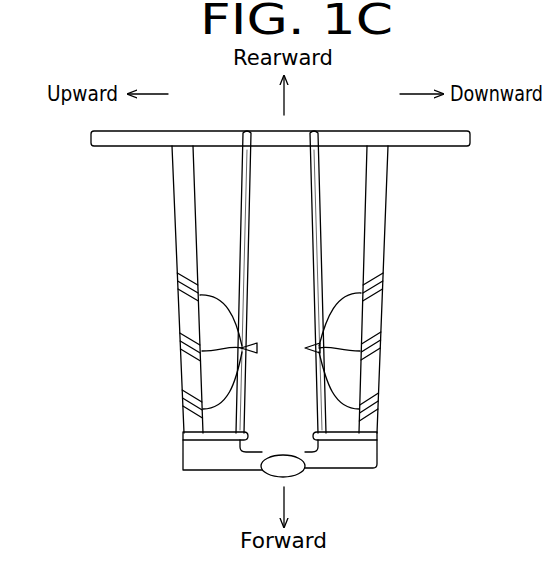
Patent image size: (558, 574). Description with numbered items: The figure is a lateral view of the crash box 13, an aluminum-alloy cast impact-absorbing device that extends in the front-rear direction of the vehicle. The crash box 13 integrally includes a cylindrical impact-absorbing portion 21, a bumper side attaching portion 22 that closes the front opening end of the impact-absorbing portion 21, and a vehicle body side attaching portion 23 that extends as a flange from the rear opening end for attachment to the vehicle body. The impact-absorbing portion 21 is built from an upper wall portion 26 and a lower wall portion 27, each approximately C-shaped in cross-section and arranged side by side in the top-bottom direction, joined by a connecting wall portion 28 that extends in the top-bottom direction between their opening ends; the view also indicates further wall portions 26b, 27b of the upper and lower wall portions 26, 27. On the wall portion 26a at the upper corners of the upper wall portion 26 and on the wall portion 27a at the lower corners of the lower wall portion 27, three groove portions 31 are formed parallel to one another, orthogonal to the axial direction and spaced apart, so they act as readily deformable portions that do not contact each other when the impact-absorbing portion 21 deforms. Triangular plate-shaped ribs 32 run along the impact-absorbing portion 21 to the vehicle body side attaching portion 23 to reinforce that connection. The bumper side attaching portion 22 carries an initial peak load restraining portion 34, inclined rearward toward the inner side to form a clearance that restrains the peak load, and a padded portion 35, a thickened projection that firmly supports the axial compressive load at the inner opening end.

The crash box 13 is at (180, 490).
The impact-absorbing portion 21 is at (186, 311).
The bumper side attaching portion 22 is at (192, 455).
The vehicle body side attaching portion 23 is at (117, 146).
The upper wall portion 26 is at (184, 250).
The wall portion 26a is at (191, 372).
The upper portion of left side wall 26b is at (206, 206).
The lower wall portion 27 is at (379, 245).
The wall portion 27a is at (373, 380).
The upper portion of right side wall 27b is at (355, 193).
The connecting wall portion 28 is at (272, 162).
The groove portions 31 is at (305, 348).
The rib 32 is at (245, 146).
The initial peak load restraining portion 34 is at (342, 457).
The padded portion 35 is at (218, 441).